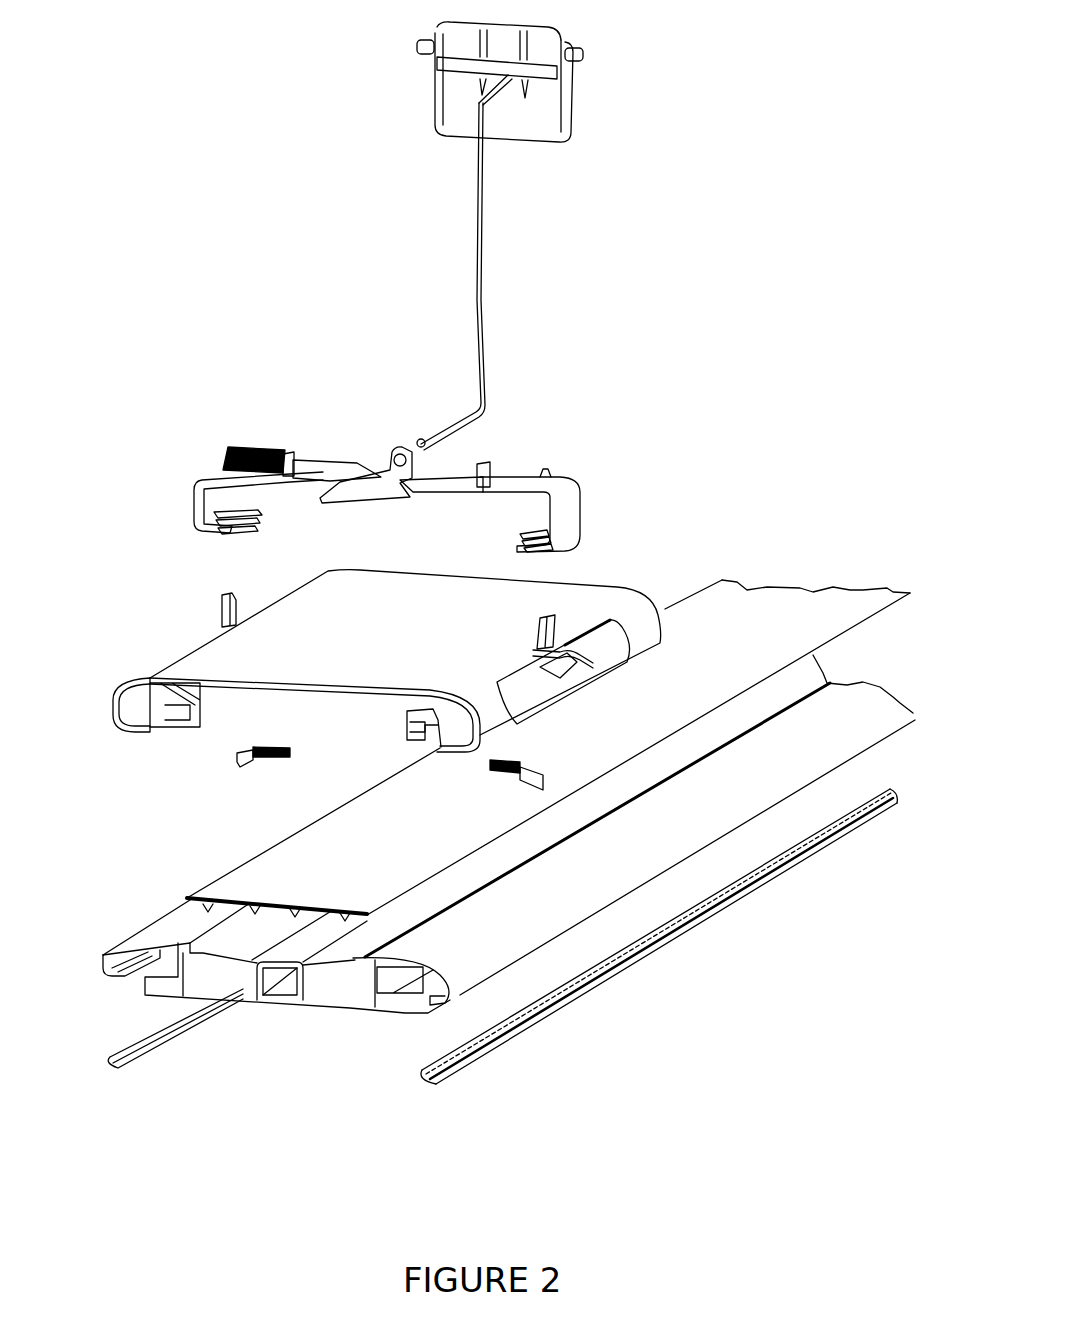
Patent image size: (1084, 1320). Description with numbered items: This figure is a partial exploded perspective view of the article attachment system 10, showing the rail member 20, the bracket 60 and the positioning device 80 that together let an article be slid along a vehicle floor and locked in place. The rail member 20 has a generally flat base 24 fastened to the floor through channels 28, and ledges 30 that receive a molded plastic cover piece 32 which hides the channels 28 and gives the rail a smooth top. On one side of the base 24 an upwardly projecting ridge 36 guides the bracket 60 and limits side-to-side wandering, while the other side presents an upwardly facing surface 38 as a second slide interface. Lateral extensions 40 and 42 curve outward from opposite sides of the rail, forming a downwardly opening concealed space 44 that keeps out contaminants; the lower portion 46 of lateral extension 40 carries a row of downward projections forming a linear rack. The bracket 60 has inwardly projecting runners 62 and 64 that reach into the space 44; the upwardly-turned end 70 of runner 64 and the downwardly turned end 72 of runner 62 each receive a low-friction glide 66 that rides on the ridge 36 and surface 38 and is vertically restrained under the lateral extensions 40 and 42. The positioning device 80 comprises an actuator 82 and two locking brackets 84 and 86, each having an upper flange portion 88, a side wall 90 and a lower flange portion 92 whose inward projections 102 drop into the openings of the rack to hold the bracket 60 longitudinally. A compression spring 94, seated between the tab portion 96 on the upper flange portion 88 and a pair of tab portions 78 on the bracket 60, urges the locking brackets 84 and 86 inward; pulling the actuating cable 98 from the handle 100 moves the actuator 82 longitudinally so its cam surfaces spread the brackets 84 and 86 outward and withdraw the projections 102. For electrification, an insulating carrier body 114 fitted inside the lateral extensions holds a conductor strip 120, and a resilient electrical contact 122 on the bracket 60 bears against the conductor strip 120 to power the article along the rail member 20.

The article attachment system 10 is at (808, 175).
The rail member 20 is at (885, 672).
The base 24 is at (509, 873).
The channels 28 is at (233, 977).
The ledges 30 is at (243, 955).
The cover piece 32 is at (790, 607).
The ridge 36 is at (412, 1000).
The upwardly facing surface 38 is at (163, 980).
The lateral extension 40 is at (173, 925).
The lateral extension 42 is at (622, 868).
The space 44 is at (127, 978).
The lower portion 46 is at (450, 1003).
The bracket 60 is at (642, 568).
The runner 62 is at (448, 757).
The runner 64 is at (116, 733).
The glides 66 is at (210, 704).
The upwardly-turned end 70 is at (208, 722).
The downwardly turned end 72 is at (405, 733).
The tab portions 78 is at (234, 605).
The positioning device 80 is at (602, 390).
The actuator 82 is at (362, 502).
The bracket 84 is at (350, 456).
The bracket 86 is at (452, 461).
The upper flange portion 88 is at (305, 484).
The side wall 90 is at (192, 504).
The lower flange portion 92 is at (205, 535).
The spring 94 is at (240, 450).
The tab portion 96 is at (300, 460).
The actuating cable 98 is at (486, 280).
The handle 100 is at (566, 110).
The projections 102 is at (240, 534).
The carrier body 114 is at (110, 1066).
The conductor strip 120 is at (124, 1062).
The resilient electrical contact 122 is at (238, 760).